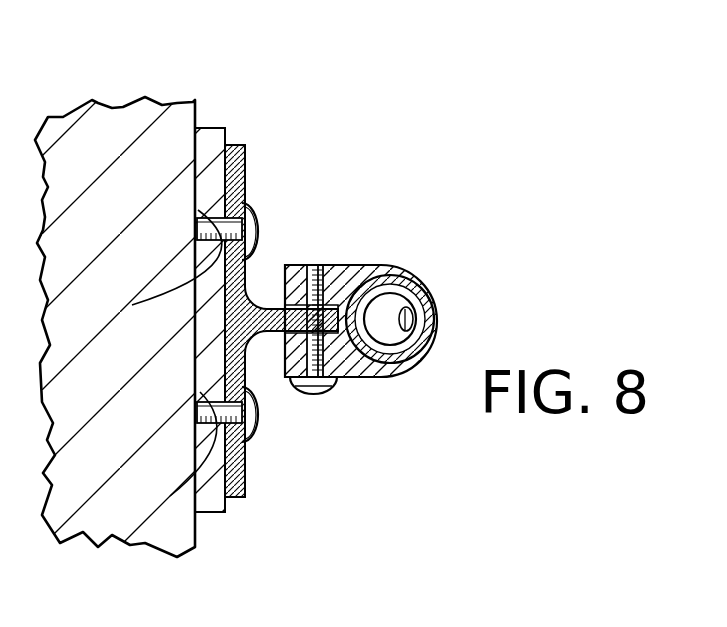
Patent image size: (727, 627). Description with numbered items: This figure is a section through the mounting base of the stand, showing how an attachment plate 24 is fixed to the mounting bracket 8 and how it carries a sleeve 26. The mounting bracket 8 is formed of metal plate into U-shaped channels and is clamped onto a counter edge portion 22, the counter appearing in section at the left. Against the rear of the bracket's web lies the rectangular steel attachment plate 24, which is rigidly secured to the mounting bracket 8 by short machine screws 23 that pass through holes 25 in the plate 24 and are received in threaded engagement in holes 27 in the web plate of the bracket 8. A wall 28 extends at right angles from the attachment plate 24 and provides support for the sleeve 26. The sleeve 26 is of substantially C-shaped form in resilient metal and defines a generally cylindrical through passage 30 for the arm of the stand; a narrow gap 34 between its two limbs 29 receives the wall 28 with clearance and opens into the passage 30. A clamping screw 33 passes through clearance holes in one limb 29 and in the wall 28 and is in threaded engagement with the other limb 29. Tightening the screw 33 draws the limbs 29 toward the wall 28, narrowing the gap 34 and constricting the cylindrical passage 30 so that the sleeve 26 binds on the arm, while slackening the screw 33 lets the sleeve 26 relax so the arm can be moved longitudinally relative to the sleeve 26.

The mounting bracket 8 is at (213, 128).
The counter edge portion 22 is at (142, 118).
The machine screw 23 is at (258, 222).
The attachment plate 24 is at (245, 182).
The hole 25 is at (197, 221).
The sleeve 26 is at (433, 293).
The hole 27 is at (172, 282).
The wall 28 is at (263, 305).
The limb 29 is at (387, 266).
The cylindrical through passage 30 is at (437, 345).
The clamping screw 33 is at (312, 394).
The gap 34 is at (333, 266).